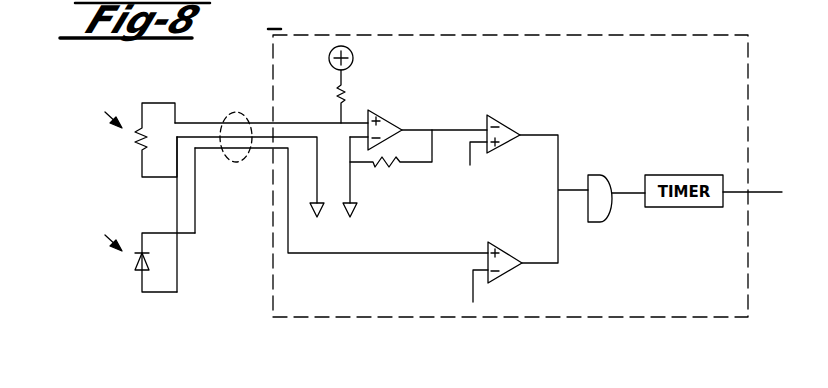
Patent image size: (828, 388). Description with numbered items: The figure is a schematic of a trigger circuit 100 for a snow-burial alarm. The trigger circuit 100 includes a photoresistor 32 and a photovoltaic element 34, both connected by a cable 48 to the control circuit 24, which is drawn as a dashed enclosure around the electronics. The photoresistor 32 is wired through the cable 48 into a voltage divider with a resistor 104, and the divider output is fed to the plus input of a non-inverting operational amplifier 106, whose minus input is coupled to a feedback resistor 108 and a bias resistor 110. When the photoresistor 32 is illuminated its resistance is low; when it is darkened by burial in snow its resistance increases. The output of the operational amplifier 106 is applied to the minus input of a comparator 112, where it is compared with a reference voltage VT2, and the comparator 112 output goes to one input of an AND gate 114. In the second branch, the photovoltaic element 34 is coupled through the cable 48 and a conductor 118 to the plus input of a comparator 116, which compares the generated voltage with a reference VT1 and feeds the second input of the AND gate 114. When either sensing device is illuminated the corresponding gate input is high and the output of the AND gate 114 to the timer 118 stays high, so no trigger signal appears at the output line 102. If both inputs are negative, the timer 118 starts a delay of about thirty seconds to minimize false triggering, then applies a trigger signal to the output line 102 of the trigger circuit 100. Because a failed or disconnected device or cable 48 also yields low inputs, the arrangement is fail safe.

The control circuit 24 is at (273, 252).
The photoresistor 32 is at (134, 152).
The photovoltaic element 34 is at (137, 271).
The cable 48 is at (227, 120).
The trigger circuit 100 is at (258, 325).
The output line 102 is at (762, 193).
The resistor 104 is at (334, 86).
The operational amplifier 106 is at (380, 112).
The feedback resistor 108 is at (386, 166).
The bias resistor 110 is at (350, 176).
The comparator 112 is at (497, 122).
The AND gate 114 is at (603, 176).
The comparator 116 is at (490, 247).
The timer 118 is at (196, 192).